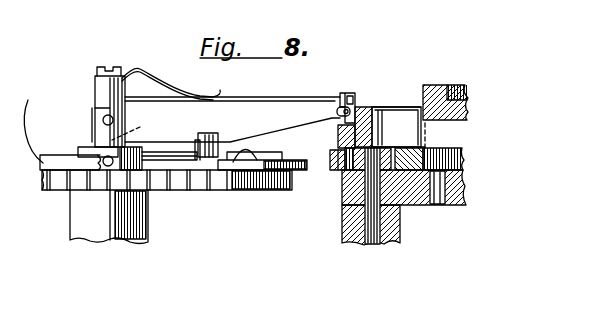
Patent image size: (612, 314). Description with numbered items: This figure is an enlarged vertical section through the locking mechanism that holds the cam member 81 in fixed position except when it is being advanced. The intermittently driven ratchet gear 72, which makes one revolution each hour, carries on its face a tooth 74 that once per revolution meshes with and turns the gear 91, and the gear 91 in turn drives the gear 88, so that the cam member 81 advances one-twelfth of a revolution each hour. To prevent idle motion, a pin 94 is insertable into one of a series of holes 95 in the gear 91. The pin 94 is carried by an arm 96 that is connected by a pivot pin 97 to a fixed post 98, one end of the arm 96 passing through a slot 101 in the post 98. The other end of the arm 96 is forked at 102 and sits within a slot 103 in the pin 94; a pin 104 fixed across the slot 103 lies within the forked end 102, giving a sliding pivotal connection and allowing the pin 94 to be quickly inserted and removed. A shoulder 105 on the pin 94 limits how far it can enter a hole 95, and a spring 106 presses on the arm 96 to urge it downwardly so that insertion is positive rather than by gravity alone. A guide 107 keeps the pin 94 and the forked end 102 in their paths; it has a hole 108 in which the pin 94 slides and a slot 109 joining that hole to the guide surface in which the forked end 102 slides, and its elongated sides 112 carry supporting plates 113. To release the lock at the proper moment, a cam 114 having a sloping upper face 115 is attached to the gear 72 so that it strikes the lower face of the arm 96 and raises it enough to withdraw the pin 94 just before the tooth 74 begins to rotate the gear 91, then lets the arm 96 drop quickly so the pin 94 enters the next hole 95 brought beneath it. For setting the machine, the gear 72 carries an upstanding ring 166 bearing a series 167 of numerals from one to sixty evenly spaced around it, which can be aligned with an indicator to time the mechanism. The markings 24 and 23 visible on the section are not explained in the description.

The fixed post 98 is at (100, 83).
The pivot pin 97 is at (105, 117).
The spring 106 is at (136, 67).
The arm 96 is at (247, 105).
The slot 101 is at (150, 123).
The plate 24 is at (70, 161).
The plate opening 23 is at (94, 161).
The upstanding ring 166 is at (240, 238).
The series of numerals 167 is at (58, 160).
The ratchet gear 72 is at (175, 186).
The cam 114 is at (215, 150).
The sloping upper face 115 is at (217, 143).
The tooth 74 is at (302, 176).
The forked end 102 is at (340, 97).
The slot 103 is at (352, 93).
The pin 104 is at (337, 110).
The guide 107 is at (363, 110).
The shoulder 105 is at (366, 139).
The hole 108 is at (375, 115).
The slot 109 is at (340, 136).
The cam member 81 is at (470, 108).
The elongated sides 112 is at (427, 130).
The supporting plates 113 is at (420, 144).
The gear 88 is at (467, 158).
The holes 95 is at (355, 172).
The gear 91 is at (380, 162).
The pin 94 is at (330, 142).